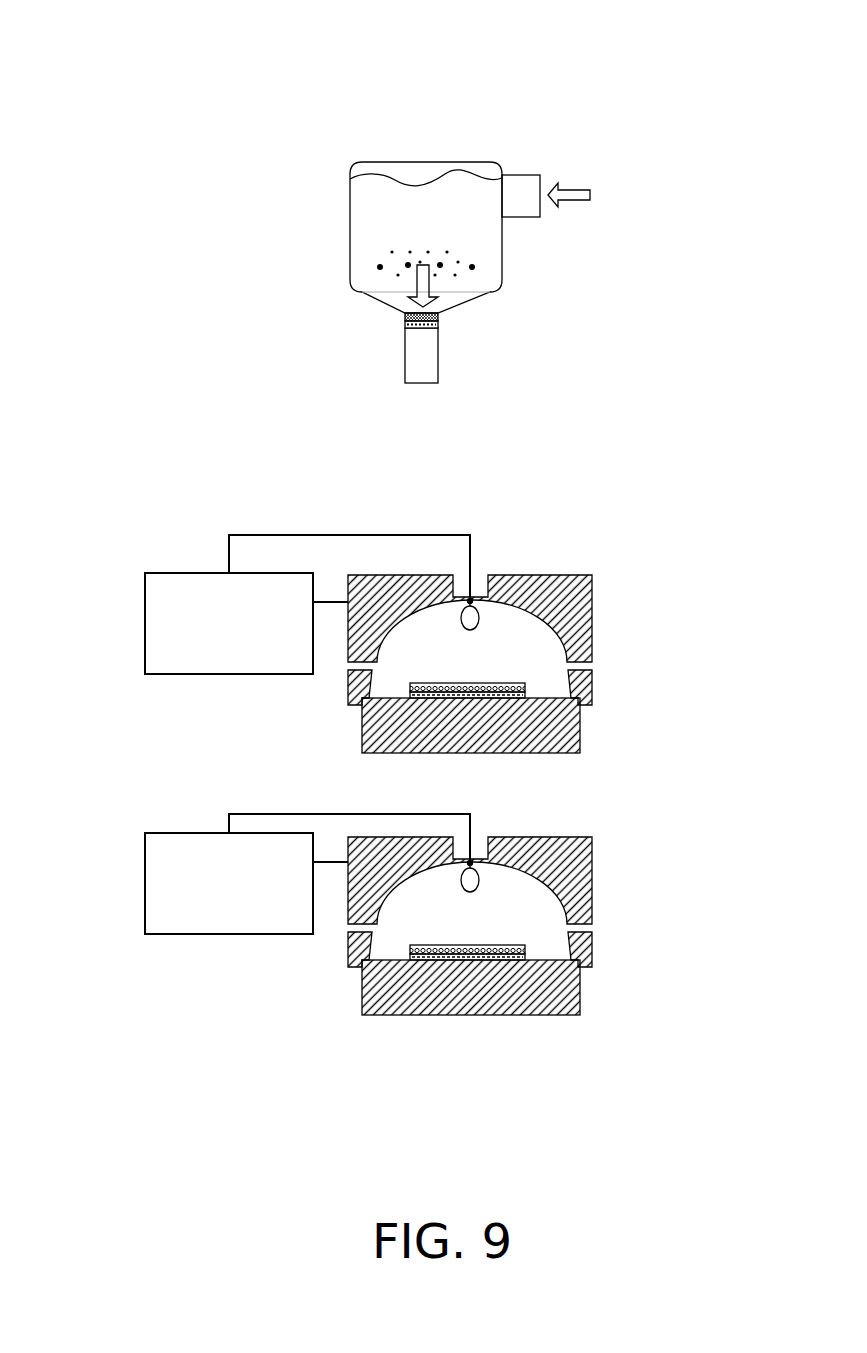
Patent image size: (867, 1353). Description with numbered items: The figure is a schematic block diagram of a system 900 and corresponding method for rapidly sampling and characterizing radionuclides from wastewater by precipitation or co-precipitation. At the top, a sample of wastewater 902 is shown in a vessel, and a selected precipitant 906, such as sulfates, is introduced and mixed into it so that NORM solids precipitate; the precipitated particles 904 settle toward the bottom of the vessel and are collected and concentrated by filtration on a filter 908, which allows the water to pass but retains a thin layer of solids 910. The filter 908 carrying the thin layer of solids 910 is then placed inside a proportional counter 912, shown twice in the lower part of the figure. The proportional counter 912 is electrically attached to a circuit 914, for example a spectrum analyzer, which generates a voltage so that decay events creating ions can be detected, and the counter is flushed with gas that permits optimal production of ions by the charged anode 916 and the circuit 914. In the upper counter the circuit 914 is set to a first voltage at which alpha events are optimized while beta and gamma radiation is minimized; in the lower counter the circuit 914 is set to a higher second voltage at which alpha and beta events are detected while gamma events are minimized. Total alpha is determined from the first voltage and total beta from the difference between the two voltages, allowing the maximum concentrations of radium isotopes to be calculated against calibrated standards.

The system 900 is at (150, 70).
The sample of wastewater 902 is at (350, 216).
The nanoparticles 904 is at (382, 271).
The selected precipitant 906 is at (606, 195).
The filter 908 is at (438, 326).
The thin layer of solids 910 is at (438, 316).
The proportional counter 912 is at (606, 615).
The circuit (spectrum analyzer) 914 is at (145, 622).
The charged anode 916 is at (476, 617).